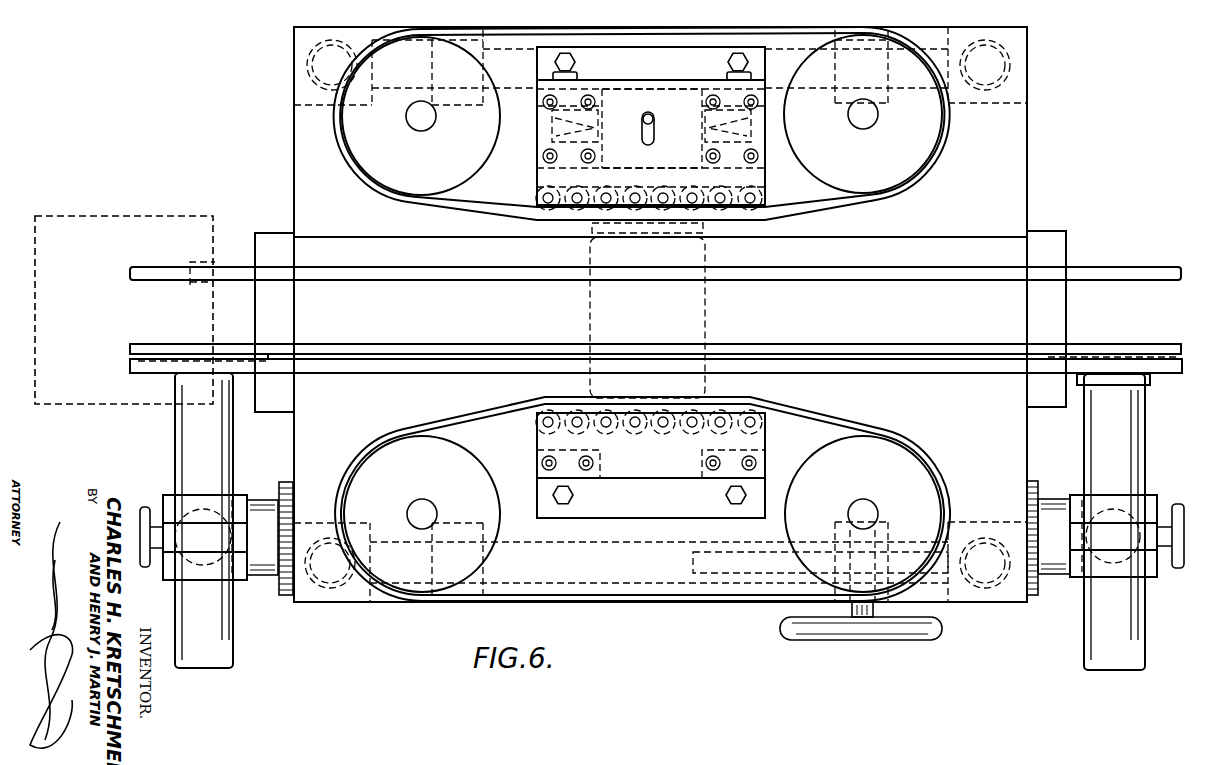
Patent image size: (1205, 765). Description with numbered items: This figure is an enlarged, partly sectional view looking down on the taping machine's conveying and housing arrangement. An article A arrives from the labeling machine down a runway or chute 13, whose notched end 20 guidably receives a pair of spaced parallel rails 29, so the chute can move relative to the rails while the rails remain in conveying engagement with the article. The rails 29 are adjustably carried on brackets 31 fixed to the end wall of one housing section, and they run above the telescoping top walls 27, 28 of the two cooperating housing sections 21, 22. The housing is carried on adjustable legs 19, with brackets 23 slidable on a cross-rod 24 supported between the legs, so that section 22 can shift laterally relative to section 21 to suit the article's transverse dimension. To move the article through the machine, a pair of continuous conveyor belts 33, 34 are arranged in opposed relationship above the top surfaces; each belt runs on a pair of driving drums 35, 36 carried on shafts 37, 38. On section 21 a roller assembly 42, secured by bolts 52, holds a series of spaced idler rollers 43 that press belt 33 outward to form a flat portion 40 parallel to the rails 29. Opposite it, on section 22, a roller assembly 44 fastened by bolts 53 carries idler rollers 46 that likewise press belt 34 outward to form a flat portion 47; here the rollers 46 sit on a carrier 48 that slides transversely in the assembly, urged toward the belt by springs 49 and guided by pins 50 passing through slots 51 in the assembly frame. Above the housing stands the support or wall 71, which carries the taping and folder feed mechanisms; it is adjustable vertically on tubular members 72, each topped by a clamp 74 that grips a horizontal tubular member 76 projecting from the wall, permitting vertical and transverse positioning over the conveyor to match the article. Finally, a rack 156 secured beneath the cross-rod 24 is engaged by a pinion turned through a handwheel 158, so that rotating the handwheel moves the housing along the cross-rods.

The runway or chute 13 is at (173, 216).
The adjustable legs 19 is at (307, 68).
The notched end 20 is at (212, 262).
The housing section 21 is at (1028, 422).
The housing section 22 is at (1028, 181).
The brackets 23 is at (892, 96).
The cross-rod 24 is at (813, 92).
The telescoping top wall 27 is at (1010, 256).
The telescoping top wall 28 is at (1012, 220).
The rails 29 is at (1034, 366).
The brackets 31 is at (275, 247).
The conveyor belt 33 is at (875, 430).
The conveyor belt 34 is at (890, 191).
The driving drum 35 is at (468, 162).
The driving drum 36 is at (817, 158).
The shaft 37 is at (418, 126).
The shaft 38 is at (864, 129).
The flat portion 40 is at (742, 402).
The roller assembly 42 is at (537, 442).
The idler rollers 43 is at (660, 433).
The roller assembly 44 is at (539, 93).
The idler rollers 46 is at (624, 190).
The flat portion 47 is at (740, 222).
The carrier 48 is at (659, 106).
The springs 49 is at (651, 128).
The pins 50 is at (654, 119).
The slots 51 is at (655, 137).
The bolts 52 is at (575, 495).
The bolts 53 is at (577, 62).
The support or wall 71 is at (883, 346).
The tubular members 72 is at (211, 580).
The clamp 74 is at (233, 497).
The tubular member 76 is at (233, 428).
The rack 156 is at (733, 574).
The handwheel 158 is at (877, 633).
The article A is at (706, 327).